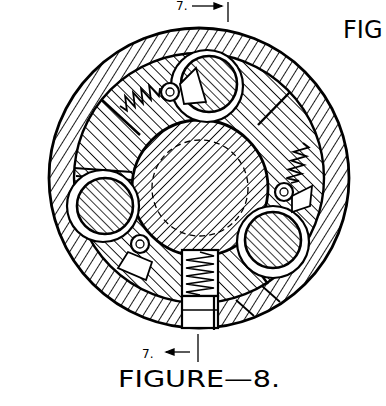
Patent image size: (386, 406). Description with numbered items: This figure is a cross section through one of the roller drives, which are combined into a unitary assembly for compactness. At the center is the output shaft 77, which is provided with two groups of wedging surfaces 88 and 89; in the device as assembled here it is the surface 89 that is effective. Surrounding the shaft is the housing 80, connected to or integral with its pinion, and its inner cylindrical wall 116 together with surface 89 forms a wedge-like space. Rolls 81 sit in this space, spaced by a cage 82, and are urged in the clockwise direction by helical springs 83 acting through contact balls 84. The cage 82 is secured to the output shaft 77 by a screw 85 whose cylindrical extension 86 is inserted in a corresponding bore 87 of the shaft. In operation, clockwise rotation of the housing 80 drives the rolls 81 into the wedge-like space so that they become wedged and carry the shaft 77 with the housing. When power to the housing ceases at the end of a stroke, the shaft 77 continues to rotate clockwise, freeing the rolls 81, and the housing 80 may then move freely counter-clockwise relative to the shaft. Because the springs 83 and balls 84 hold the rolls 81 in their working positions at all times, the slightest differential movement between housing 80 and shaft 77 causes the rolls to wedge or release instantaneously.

The output shaft 77 is at (300, 133).
The housing 80 is at (128, 66).
The roll 81 is at (262, 60).
The cage 82 is at (92, 116).
The helical spring 83 is at (124, 98).
The contact ball 84 is at (170, 80).
The screw 85 is at (216, 322).
The cylindrical extension 86 is at (182, 328).
The bore 87 is at (254, 314).
The wedging surface 88 is at (226, 48).
The wedging surface 89 is at (76, 170).
The inner cylindrical wall 116 is at (276, 303).